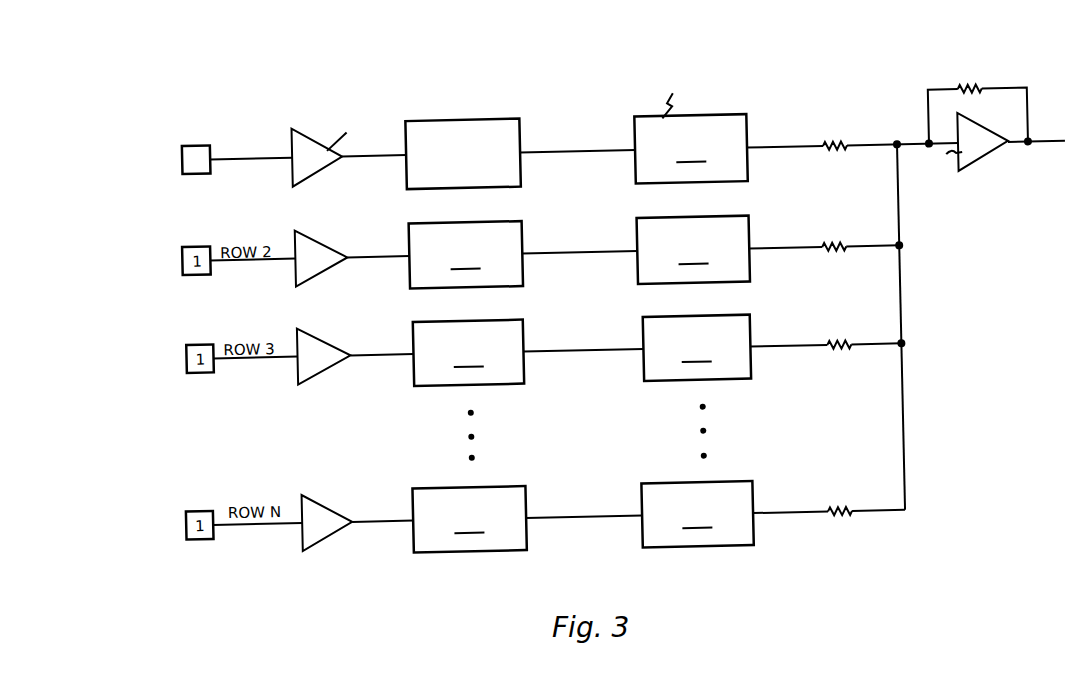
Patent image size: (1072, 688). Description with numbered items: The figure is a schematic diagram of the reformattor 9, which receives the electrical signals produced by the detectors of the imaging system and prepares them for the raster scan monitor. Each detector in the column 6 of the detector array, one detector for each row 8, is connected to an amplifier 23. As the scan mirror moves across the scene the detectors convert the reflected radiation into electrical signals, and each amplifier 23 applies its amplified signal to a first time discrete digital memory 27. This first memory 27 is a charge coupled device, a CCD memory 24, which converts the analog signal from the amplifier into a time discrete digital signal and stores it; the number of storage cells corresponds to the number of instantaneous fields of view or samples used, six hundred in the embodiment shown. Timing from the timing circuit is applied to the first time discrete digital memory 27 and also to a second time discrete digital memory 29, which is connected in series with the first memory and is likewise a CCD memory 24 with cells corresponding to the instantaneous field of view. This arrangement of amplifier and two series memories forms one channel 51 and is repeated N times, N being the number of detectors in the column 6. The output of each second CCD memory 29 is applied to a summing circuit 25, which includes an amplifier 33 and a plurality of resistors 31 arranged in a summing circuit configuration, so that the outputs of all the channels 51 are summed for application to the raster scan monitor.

The column 6 is at (201, 126).
The row 8 is at (185, 151).
The channel 51 is at (250, 137).
The amplifier 23 is at (308, 135).
The CCD memory 24 is at (418, 172).
The first time discrete digital memory 27 is at (508, 117).
The second time discrete digital memory 29 is at (731, 119).
The resistor 31 is at (836, 147).
The summing circuit 25 is at (898, 136).
The amplifier 33 is at (982, 162).
The reformattor 9 is at (801, 589).